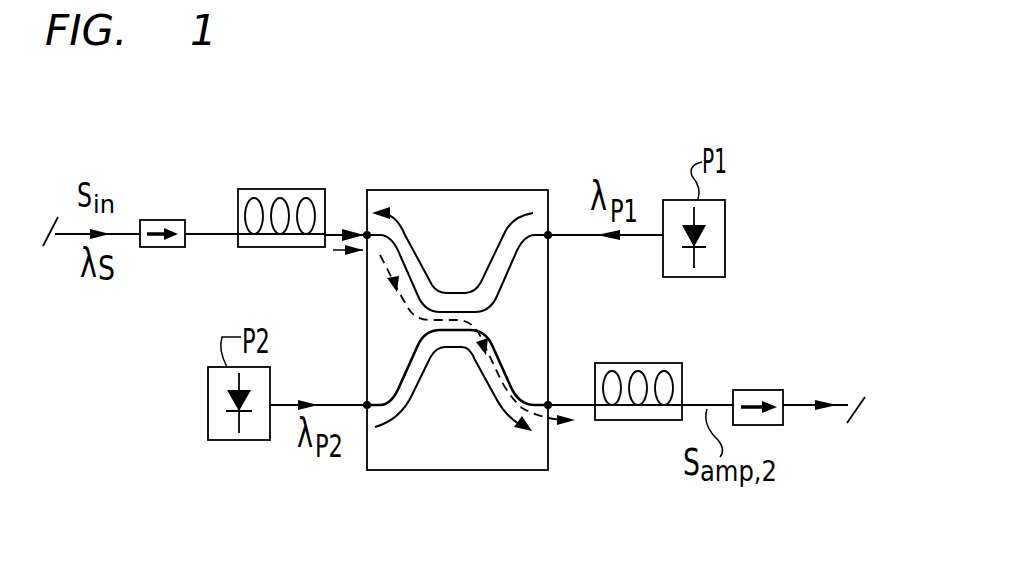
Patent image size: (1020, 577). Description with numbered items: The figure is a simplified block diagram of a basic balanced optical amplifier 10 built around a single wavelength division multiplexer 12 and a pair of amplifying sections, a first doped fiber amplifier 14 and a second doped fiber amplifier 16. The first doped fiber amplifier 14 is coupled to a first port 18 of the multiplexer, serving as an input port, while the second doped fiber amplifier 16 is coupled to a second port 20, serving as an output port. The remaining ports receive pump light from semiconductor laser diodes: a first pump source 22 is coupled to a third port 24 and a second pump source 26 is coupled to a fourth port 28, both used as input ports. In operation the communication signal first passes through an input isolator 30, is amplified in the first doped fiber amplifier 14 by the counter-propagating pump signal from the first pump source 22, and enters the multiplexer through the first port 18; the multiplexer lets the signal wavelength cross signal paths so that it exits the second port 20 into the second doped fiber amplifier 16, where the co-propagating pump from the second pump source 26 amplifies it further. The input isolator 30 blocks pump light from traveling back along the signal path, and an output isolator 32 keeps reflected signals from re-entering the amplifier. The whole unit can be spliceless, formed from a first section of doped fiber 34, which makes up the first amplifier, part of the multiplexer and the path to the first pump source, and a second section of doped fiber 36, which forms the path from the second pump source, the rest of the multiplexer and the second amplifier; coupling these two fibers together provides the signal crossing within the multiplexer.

The balanced optical amplifier 10 is at (203, 124).
The wavelength division multiplexer 12 is at (476, 190).
The first doped fiber amplifier 14 is at (262, 248).
The second doped fiber amplifier 16 is at (645, 421).
The first port 18 is at (367, 235).
The second port 20 is at (548, 405).
The first pump source 22 is at (727, 238).
The third port 24 is at (548, 235).
The second pump source 26 is at (242, 441).
The fourth port 28 is at (367, 405).
The input isolator 30 is at (170, 220).
The output isolator 32 is at (763, 390).
The first section of doped fiber 34 is at (282, 190).
The second section of doped fiber 36 is at (640, 363).